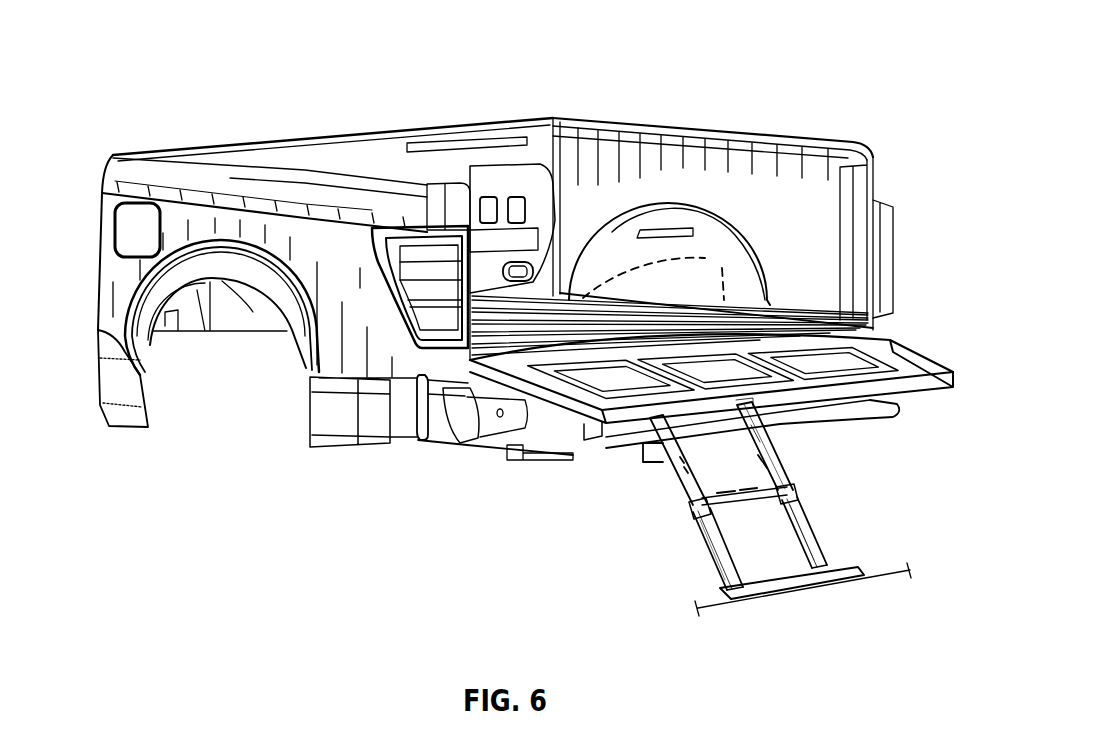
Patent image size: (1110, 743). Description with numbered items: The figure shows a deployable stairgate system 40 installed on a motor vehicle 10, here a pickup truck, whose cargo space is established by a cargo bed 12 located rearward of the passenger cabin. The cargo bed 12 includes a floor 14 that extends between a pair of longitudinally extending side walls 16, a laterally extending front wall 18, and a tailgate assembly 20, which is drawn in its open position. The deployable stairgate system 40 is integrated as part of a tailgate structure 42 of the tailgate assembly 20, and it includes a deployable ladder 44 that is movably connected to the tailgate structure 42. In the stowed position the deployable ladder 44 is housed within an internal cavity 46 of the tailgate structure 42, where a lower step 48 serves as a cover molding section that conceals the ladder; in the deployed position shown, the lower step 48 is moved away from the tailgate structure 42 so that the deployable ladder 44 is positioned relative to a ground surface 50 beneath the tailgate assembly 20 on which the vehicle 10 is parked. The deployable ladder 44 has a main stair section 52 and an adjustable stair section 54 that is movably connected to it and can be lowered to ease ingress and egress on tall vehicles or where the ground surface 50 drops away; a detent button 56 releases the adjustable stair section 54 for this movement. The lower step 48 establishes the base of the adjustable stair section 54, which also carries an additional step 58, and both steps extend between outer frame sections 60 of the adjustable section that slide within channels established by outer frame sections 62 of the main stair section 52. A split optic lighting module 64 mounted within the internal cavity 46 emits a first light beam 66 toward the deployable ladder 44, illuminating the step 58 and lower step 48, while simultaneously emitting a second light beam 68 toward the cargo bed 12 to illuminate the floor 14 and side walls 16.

The motor vehicle 10 is at (617, 96).
The cargo bed 12 is at (650, 178).
The floor 14 is at (543, 313).
The side walls 16 is at (300, 223).
The front wall 18 is at (404, 148).
The tailgate assembly 20 is at (514, 418).
The deployable stairgate system 40 is at (626, 490).
The tailgate structure 42 is at (910, 388).
The deployable ladder 44 is at (682, 548).
The internal cavity 46 is at (596, 424).
The lower step 48 is at (830, 576).
The ground surface 50 is at (890, 572).
The main stair section 52 is at (790, 459).
The adjustable stair section 54 is at (816, 518).
The detent button 56 is at (700, 512).
The additional step 58 is at (742, 502).
The outer frame sections 60 is at (730, 563).
The outer frame sections 62 is at (647, 452).
The split optic lighting module 64 is at (738, 401).
The first light beam 66 is at (760, 433).
The second light beam 68 is at (712, 262).